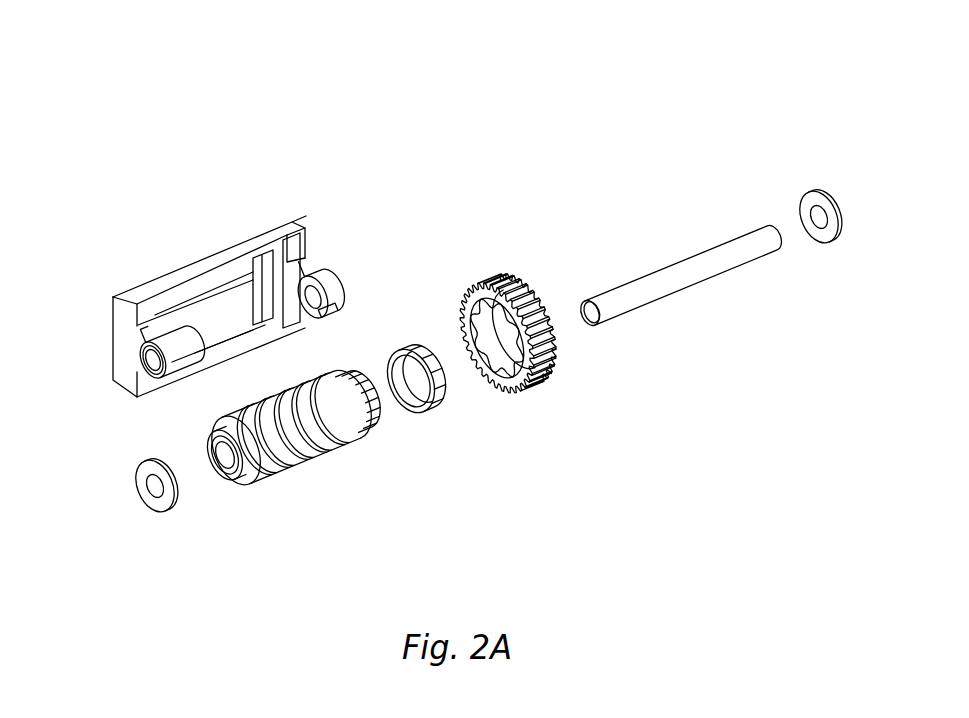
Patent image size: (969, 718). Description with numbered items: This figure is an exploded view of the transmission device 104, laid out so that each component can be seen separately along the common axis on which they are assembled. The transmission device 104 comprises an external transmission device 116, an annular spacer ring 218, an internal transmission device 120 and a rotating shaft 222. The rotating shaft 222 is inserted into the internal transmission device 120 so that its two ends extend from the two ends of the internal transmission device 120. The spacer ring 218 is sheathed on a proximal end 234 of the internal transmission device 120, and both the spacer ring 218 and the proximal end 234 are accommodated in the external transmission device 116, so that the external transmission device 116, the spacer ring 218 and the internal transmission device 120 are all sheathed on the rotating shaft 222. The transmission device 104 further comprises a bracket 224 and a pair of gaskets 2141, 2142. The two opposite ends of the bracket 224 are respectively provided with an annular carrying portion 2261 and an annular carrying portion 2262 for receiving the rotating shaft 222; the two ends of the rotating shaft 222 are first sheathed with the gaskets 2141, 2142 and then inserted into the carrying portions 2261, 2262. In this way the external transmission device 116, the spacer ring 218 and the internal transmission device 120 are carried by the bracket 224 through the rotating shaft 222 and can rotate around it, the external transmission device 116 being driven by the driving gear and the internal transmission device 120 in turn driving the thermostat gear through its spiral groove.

The transmission device 104 is at (115, 95).
The bracket 224 is at (227, 250).
The annular carrying portion 2262 is at (330, 277).
The annular carrying portion 2261 is at (128, 373).
The external transmission device 116 is at (520, 277).
The annular spacer ring 218 is at (425, 338).
The rotating shaft 222 is at (697, 260).
The gasket 2142 is at (823, 190).
The gasket 2141 is at (157, 507).
The internal transmission device 120 is at (298, 463).
The proximal end 234 is at (365, 425).